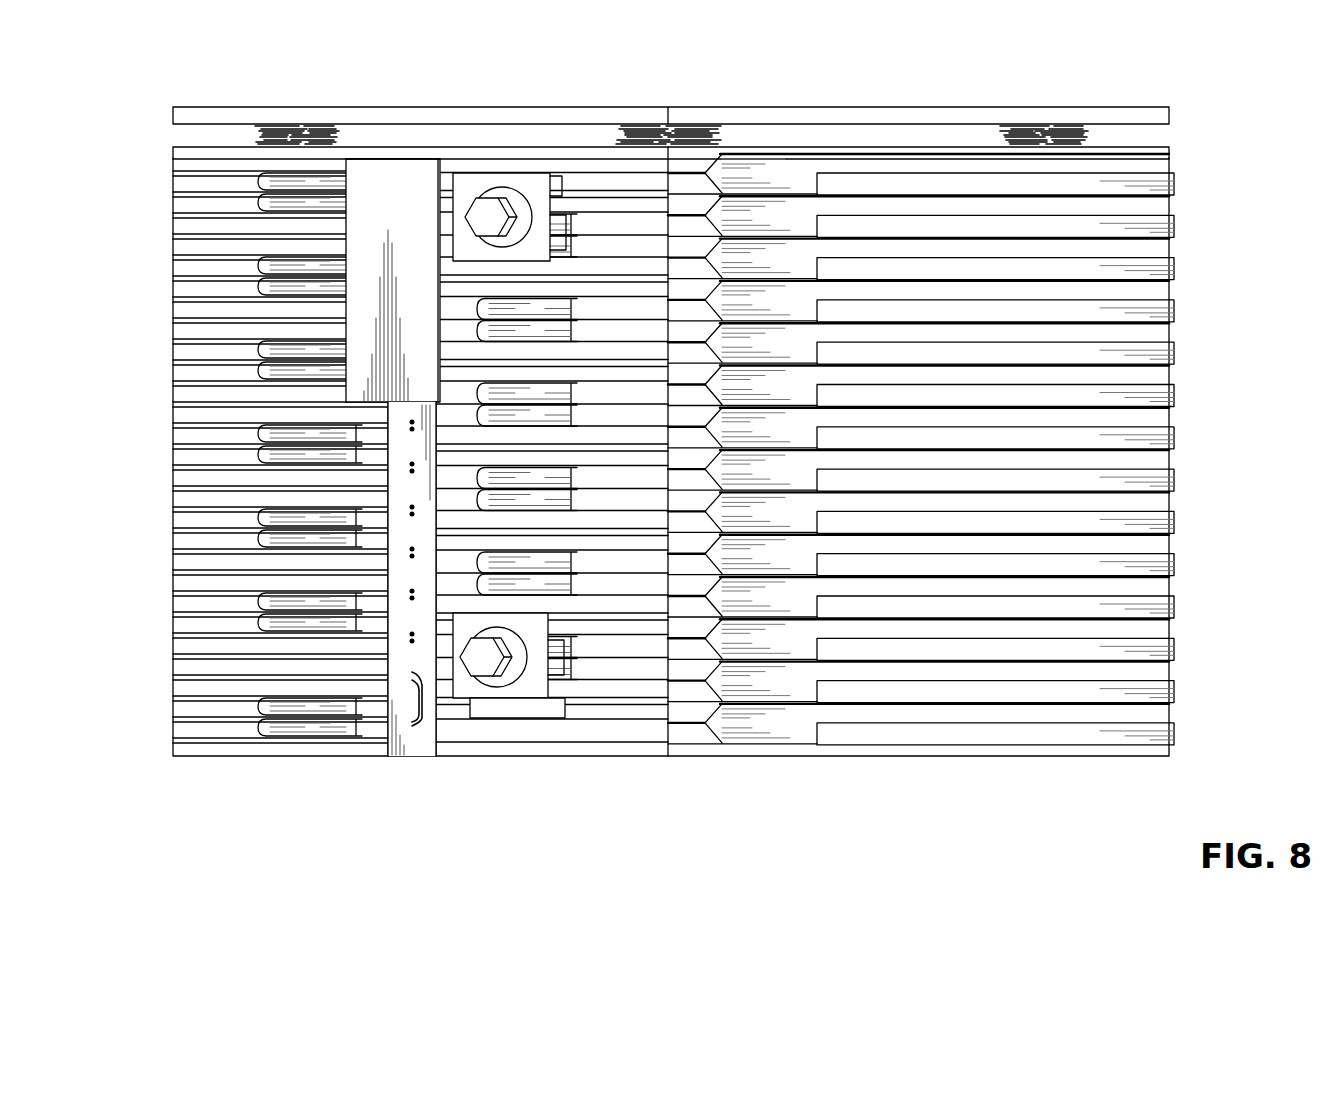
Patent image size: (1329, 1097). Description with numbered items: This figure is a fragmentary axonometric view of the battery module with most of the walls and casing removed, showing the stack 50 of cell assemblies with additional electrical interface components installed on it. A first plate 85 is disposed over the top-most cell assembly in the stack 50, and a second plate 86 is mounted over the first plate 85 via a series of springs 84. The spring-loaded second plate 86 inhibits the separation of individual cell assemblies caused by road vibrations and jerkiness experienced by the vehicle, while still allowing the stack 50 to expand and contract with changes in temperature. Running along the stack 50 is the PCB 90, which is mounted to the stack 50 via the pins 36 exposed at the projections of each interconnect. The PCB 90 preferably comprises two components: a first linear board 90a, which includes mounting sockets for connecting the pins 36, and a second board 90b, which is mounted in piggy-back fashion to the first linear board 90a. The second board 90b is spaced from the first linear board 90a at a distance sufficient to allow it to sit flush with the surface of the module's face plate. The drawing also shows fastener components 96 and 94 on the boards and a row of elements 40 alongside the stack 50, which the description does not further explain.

The first plate 85 is at (219, 153).
The PCB 90 is at (375, 200).
The second board 90b is at (398, 183).
The upper bolt 96 is at (485, 213).
The second plate 86 is at (597, 115).
The springs 84 is at (687, 132).
The stack 50 is at (247, 732).
The pins 36 is at (419, 745).
The first linear board 90a is at (432, 698).
The lower bolt 94 is at (483, 665).
The terminal blocks 40 is at (958, 743).